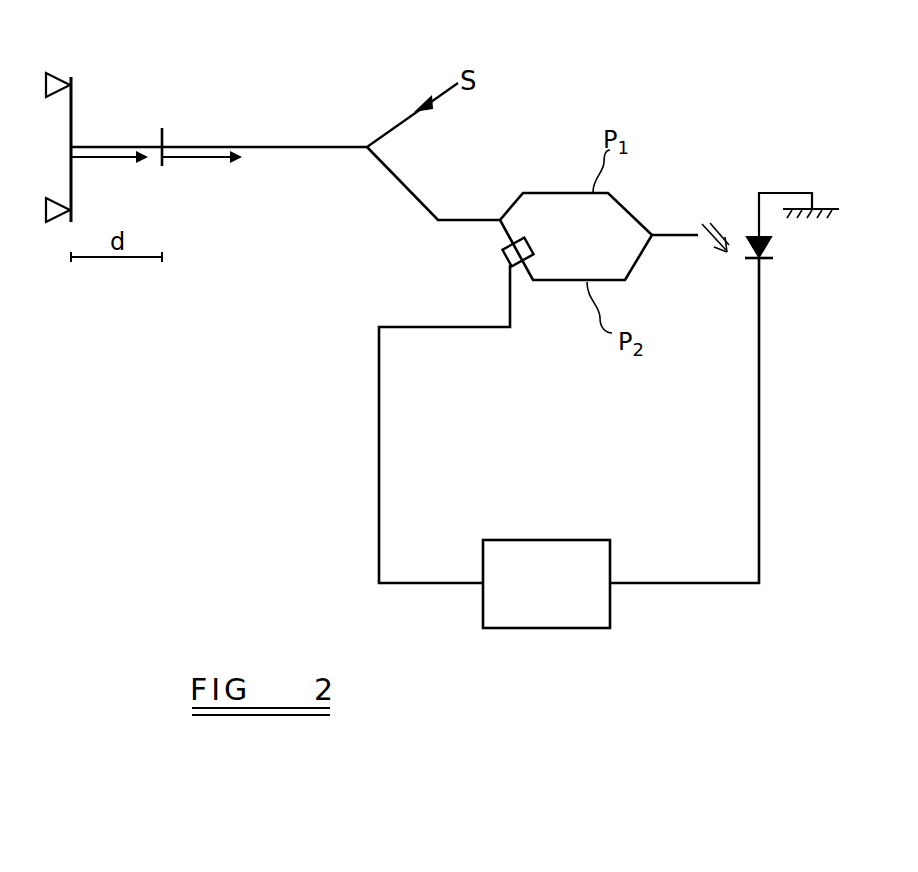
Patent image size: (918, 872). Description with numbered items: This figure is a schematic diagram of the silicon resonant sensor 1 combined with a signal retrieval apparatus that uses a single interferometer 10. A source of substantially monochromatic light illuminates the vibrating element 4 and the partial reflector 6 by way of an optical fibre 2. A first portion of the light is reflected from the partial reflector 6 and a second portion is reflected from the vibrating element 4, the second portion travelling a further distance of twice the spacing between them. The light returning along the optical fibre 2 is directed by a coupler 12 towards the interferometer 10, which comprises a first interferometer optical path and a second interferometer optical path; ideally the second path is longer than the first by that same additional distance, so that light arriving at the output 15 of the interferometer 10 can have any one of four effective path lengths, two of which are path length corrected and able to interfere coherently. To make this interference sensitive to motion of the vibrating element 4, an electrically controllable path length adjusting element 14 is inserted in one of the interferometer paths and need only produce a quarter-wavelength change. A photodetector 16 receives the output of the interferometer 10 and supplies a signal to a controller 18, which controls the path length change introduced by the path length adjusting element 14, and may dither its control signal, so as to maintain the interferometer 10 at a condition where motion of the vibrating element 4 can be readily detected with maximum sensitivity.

The silicon resonant sensor 1 is at (42, 168).
The optical fibre 2 is at (308, 147).
The vibratable element 4 is at (71, 115).
The partial reflector 6 is at (162, 135).
The interferometer 10 is at (622, 388).
The coupler 12 is at (362, 150).
The electrically controllable path length adjusting element 14 is at (500, 250).
The output 15 is at (702, 222).
The photodetector 16 is at (766, 243).
The controller 18 is at (610, 612).